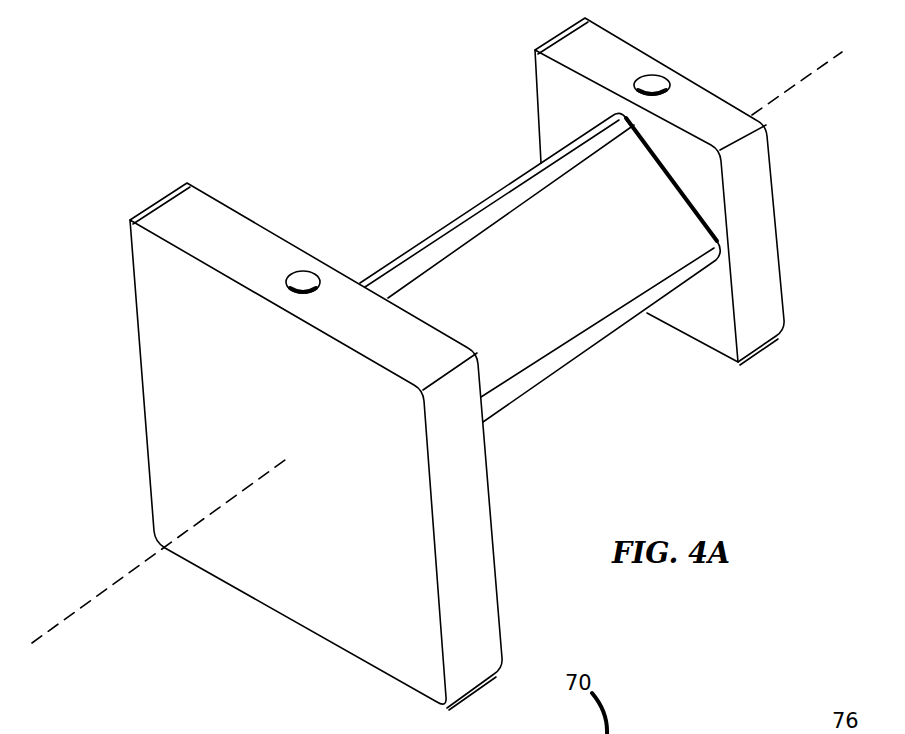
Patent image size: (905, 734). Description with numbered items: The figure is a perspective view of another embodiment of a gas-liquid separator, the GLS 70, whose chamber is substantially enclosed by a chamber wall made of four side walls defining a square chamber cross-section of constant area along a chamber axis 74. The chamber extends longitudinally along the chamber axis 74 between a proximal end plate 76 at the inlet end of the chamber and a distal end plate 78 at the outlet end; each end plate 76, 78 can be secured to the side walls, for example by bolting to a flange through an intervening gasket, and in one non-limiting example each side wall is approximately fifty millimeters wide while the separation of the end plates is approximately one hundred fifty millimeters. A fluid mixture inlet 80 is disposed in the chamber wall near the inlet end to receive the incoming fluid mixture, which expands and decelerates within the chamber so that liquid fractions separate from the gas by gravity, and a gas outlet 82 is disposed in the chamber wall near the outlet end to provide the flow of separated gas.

The GLS 70 is at (436, 112).
The chamber axis 74 is at (130, 573).
The proximal end plate 76 is at (777, 302).
The distal end plate 78 is at (205, 205).
The fluid mixture inlet 80 is at (648, 80).
The gas outlet 82 is at (304, 271).